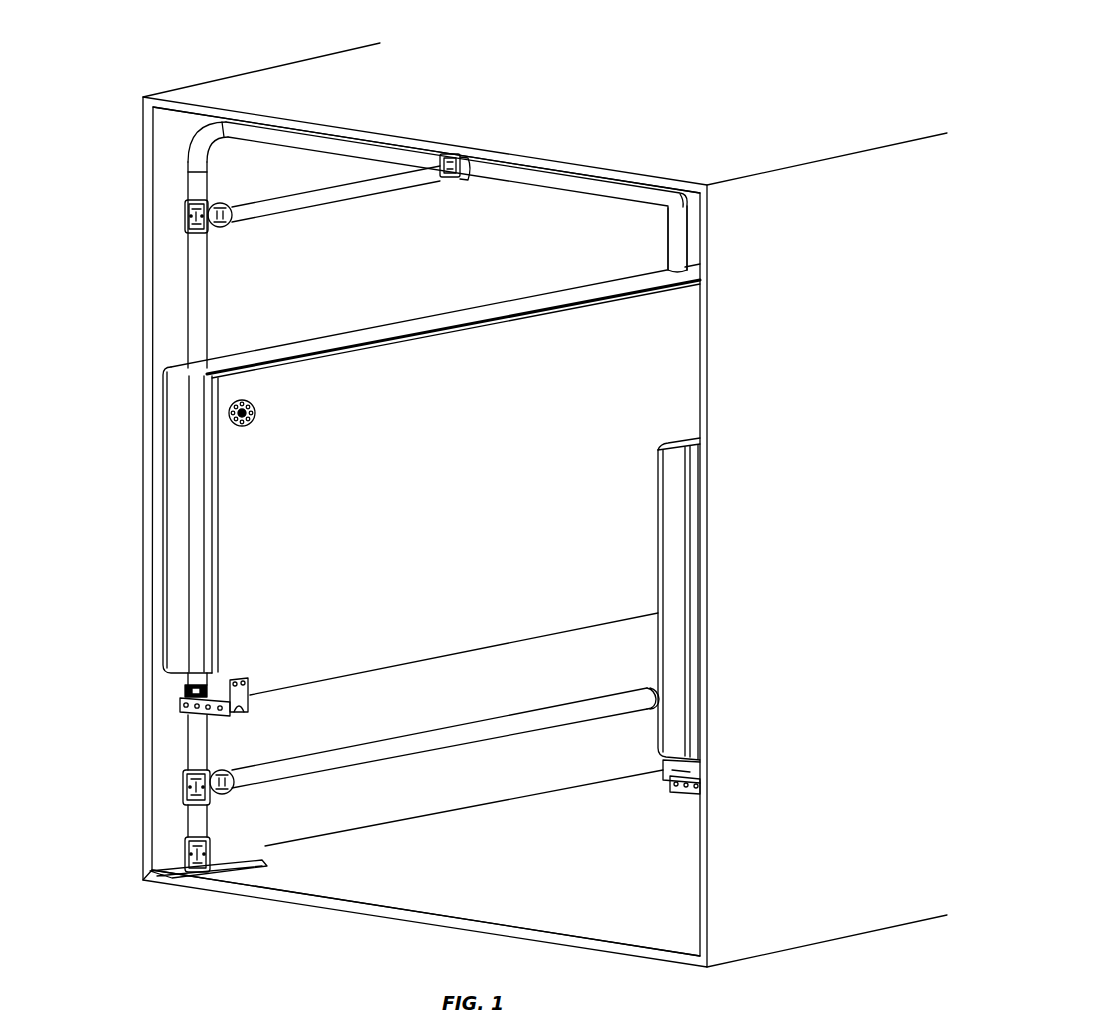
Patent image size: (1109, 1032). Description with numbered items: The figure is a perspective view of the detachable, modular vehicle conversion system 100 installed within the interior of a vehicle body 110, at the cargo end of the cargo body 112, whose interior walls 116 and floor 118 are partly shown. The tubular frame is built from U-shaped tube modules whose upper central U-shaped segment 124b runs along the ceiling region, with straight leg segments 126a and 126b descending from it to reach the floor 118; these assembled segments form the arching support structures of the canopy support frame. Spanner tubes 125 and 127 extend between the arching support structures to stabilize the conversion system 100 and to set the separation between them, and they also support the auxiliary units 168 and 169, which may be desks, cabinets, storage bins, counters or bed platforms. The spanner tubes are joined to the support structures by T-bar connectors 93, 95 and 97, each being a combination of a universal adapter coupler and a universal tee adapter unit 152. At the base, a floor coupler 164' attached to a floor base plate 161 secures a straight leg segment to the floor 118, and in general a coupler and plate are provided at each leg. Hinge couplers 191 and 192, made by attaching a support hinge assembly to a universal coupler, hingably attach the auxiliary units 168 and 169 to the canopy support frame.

The vehicle conversion system 100 is at (815, 56).
The vehicle body 110 is at (284, 85).
The cargo body 112 is at (118, 794).
The interior walls 116 is at (468, 277).
The floor 118 is at (576, 880).
The upper central U-shaped segment 124b is at (278, 137).
The spanner tube 125 is at (338, 192).
The straight leg segment 126a is at (672, 243).
The straight leg segment 126b is at (190, 300).
The spanner tube 127 is at (421, 742).
The T-bar connector 93 is at (185, 782).
The T-bar connector 95 is at (183, 215).
The T-bar connector 97 is at (450, 155).
The universal tee adapter unit 152 is at (233, 788).
The floor base plate 161 is at (222, 858).
The floor coupler 164' is at (148, 844).
The auxiliary unit 168 is at (682, 573).
The auxiliary unit 169 is at (468, 507).
The hinge coupler 191 is at (182, 706).
The hinge coupler 192 is at (700, 794).